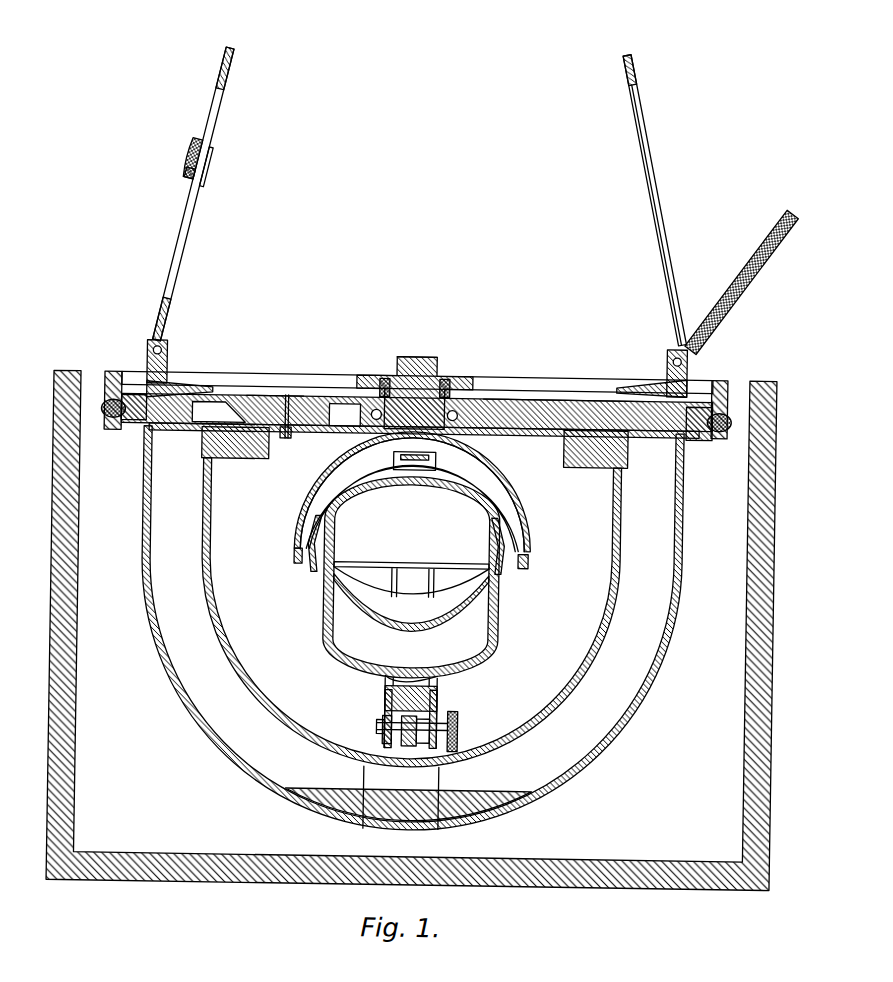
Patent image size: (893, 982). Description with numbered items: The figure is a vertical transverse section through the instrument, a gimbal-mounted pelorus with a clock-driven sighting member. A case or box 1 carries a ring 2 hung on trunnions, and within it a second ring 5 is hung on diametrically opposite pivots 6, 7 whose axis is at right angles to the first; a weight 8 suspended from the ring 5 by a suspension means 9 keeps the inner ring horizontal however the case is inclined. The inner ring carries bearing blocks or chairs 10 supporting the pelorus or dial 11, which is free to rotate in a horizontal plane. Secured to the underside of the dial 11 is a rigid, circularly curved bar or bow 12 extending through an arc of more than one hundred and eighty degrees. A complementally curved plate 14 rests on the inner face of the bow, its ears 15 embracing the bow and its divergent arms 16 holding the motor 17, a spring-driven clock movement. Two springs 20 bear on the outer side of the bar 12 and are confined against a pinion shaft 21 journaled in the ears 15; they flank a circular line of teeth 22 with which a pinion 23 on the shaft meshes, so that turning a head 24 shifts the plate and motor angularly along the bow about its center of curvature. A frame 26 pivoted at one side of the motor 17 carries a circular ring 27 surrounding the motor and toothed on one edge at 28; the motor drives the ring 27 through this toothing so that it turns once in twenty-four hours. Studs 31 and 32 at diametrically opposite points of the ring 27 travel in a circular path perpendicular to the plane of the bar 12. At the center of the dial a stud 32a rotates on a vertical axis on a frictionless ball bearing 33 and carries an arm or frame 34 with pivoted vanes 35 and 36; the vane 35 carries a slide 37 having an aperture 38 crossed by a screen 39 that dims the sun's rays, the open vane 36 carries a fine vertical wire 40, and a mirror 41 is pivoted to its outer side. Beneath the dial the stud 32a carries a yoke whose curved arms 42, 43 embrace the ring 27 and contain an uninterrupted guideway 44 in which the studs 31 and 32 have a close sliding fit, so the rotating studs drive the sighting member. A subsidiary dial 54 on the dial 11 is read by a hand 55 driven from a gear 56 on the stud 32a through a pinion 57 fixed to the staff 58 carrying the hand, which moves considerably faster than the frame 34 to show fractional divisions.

The case or box 1 is at (174, 882).
The ring 2 is at (723, 380).
The second ring 5 is at (679, 419).
The pivot 6 is at (131, 388).
The pivot 7 is at (703, 408).
The weight 8 is at (540, 806).
The suspension means 9 is at (678, 630).
The bearing blocks or chairs 10 is at (169, 401).
The pelorus or dial 11 is at (520, 398).
The bar or bow 12 is at (438, 690).
The curved plate 14 is at (387, 690).
The ears 15 is at (386, 703).
The divergent arms 16 is at (326, 613).
The motor 17 is at (366, 541).
The springs 20 is at (386, 736).
The pinion shaft 21 is at (399, 746).
The teeth 22 is at (386, 722).
The pinion 23 is at (425, 748).
The head 24 is at (459, 727).
The frame 26 is at (408, 580).
The ring 27 is at (506, 530).
The toothed edge 28 is at (387, 676).
The stud 31 is at (295, 556).
The stud 32 is at (521, 566).
The stud 32a is at (428, 358).
The ball bearing 33 is at (370, 378).
The arm or frame 34 is at (493, 389).
The vane 35 is at (205, 97).
The vane 36 is at (628, 78).
The slide 37 is at (178, 178).
The aperture 38 is at (178, 160).
The screen 39 is at (208, 160).
The fine wire 40 is at (650, 195).
The mirror 41 is at (735, 268).
The arm 42 is at (300, 495).
The arm 43 is at (514, 478).
The guideway 44 is at (473, 465).
The subsidiary dial 54 is at (228, 398).
The hand or pointer 55 is at (286, 396).
The gear 56 is at (345, 434).
The pinion 57 is at (283, 441).
The staff 58 is at (255, 398).